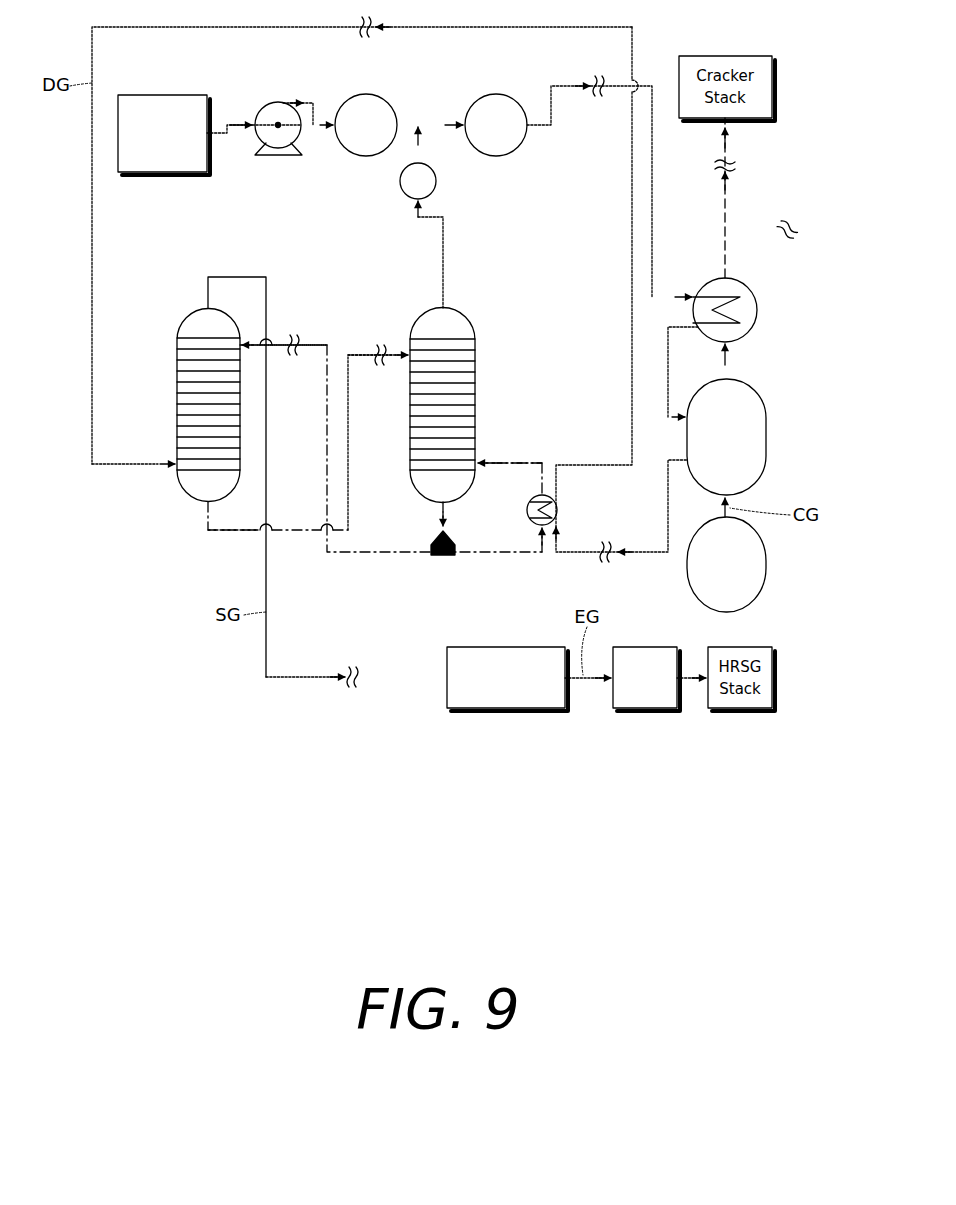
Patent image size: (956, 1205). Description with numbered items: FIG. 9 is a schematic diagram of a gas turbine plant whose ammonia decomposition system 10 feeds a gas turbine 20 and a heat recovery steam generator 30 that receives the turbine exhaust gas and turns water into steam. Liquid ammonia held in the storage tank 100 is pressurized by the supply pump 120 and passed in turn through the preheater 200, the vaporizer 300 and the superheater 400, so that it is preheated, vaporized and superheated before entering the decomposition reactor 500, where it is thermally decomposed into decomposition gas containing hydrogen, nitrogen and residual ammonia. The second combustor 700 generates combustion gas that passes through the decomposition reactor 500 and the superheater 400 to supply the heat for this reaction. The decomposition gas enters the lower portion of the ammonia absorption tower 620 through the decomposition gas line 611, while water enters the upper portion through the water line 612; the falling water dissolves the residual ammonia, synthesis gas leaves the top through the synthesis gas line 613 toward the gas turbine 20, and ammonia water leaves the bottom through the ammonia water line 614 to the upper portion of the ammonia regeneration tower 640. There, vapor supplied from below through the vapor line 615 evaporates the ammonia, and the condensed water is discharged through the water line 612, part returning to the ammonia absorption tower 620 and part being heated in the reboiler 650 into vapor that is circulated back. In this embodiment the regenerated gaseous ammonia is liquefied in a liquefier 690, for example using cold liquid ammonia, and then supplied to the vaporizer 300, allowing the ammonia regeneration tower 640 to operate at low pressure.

The ammonia decomposition system 10 is at (762, 265).
The gas turbine 20 is at (500, 647).
The heat recovery steam generator 30 is at (642, 647).
The storage tank 100 is at (170, 94).
The supply pump 120 is at (280, 109).
The preheater 200 is at (367, 103).
The vaporizer 300 is at (497, 103).
The superheater 400 is at (758, 308).
The decomposition reactor 500 is at (767, 437).
The decomposition gas line 611 is at (115, 466).
The water line 612 is at (324, 342).
The synthesis gas line 613 is at (266, 545).
The ammonia water line 614 is at (348, 355).
The vapor line 615 is at (522, 463).
The ammonia absorption tower 620 is at (185, 352).
The ammonia regeneration tower 640 is at (419, 476).
The reboiler 650 is at (527, 510).
The liquefier 690 is at (436, 176).
The second combustor 700 is at (767, 563).